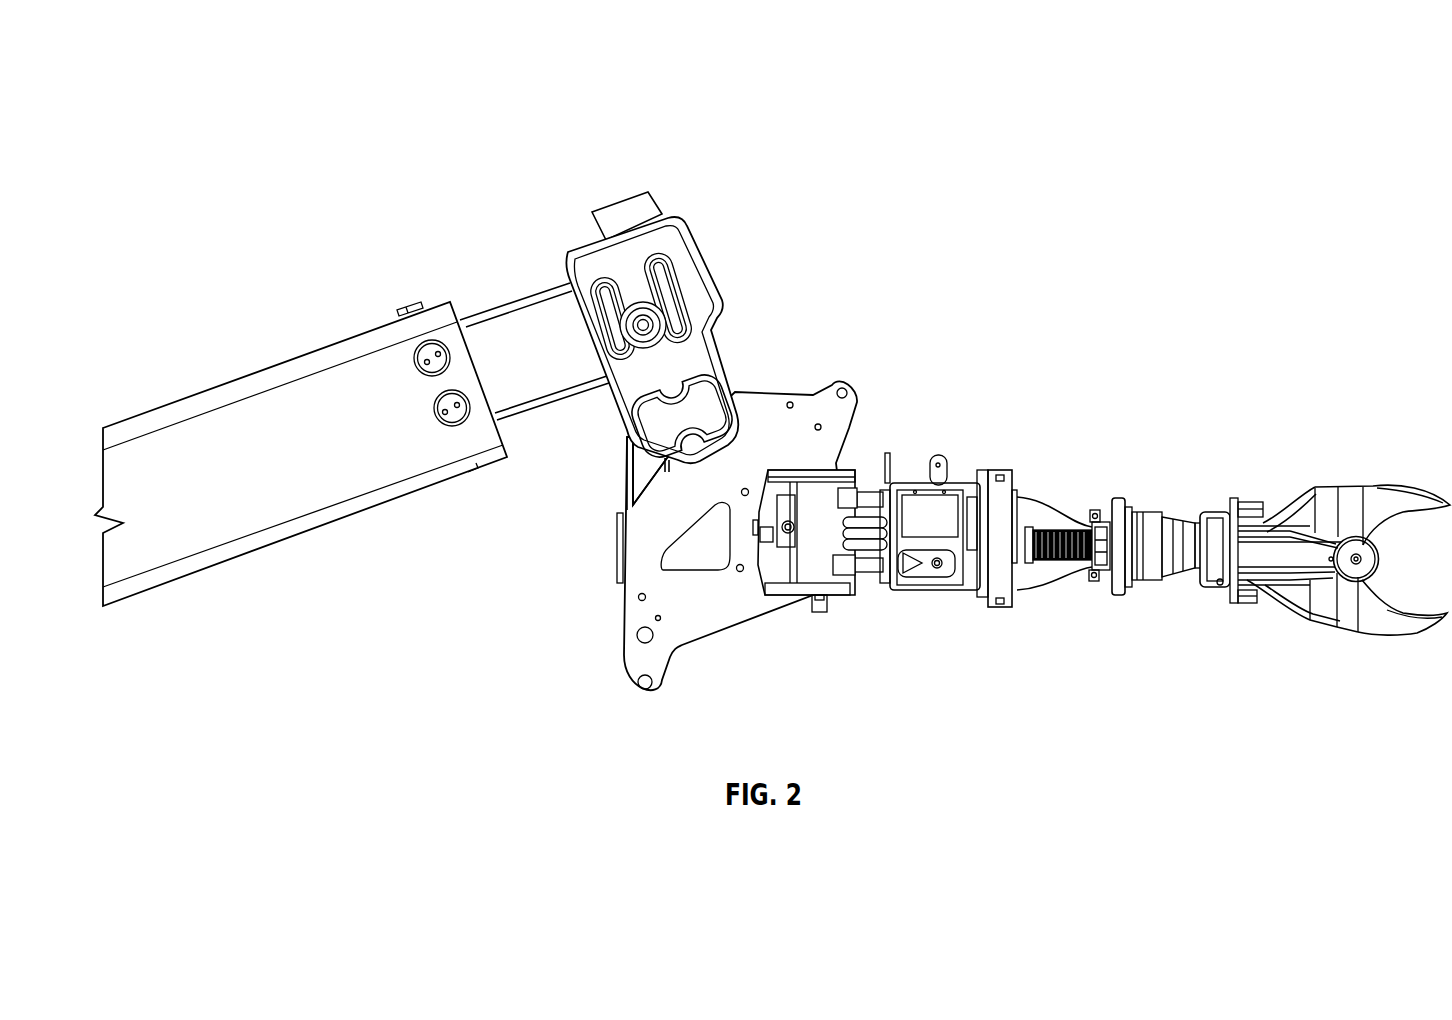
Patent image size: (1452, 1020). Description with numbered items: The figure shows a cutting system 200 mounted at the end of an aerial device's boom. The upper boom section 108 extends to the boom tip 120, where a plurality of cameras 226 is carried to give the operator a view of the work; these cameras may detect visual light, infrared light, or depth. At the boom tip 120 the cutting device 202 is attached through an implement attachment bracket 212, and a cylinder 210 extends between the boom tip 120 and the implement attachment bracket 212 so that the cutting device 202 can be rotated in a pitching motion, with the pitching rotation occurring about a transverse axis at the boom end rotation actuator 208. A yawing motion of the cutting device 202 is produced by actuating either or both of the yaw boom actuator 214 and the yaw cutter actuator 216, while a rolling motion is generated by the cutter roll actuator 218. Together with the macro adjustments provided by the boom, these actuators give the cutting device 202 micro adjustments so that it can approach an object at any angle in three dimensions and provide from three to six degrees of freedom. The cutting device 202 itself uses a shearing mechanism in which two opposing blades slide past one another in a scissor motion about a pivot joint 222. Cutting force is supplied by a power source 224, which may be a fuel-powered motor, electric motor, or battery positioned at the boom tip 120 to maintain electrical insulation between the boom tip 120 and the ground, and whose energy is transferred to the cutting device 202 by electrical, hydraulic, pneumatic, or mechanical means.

The cutting system 200 is at (203, 100).
The upper boom section 108 is at (365, 385).
The boom tip 120 is at (582, 170).
The plurality of cameras 226 is at (658, 187).
The boom end rotation actuator 208 is at (700, 393).
The cylinder 210 is at (623, 470).
The implement attachment bracket 212 is at (623, 640).
The yaw boom actuator 214 is at (806, 594).
The power source 224 is at (930, 495).
The yaw cutter actuator 216 is at (970, 490).
The cutter roll actuator 218 is at (1057, 493).
The pivot joint 222 is at (1355, 555).
The cutting device 202 is at (1113, 655).